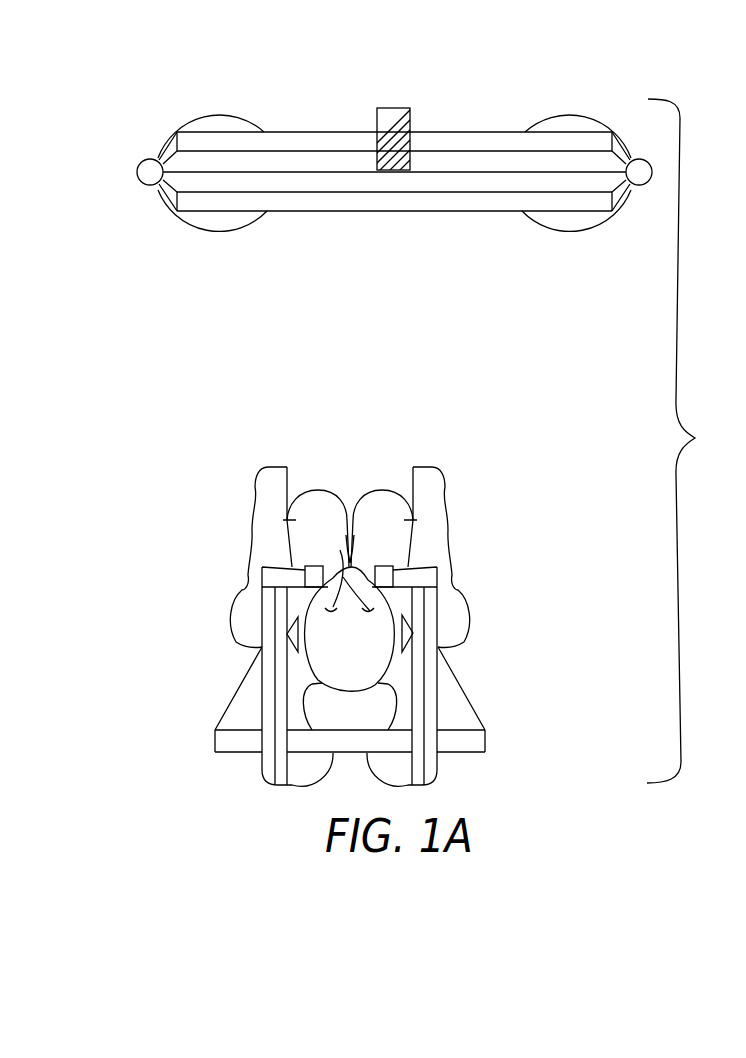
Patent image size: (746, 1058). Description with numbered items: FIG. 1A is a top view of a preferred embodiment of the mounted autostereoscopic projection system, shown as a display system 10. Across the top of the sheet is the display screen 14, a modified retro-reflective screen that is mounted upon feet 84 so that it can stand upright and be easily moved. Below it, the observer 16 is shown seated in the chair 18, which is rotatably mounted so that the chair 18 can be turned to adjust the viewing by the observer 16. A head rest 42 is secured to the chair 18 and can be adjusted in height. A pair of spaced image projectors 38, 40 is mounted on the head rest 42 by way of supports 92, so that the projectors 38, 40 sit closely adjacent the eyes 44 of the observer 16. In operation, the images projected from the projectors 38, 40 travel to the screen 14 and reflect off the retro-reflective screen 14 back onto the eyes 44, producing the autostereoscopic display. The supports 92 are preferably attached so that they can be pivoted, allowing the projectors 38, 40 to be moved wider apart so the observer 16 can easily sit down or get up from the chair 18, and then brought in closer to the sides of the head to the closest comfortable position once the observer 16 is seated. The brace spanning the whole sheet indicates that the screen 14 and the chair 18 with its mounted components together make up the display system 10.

The display system 10 is at (691, 441).
The display screen 14 is at (452, 212).
The feet 84 is at (567, 110).
The observer 16 is at (413, 478).
The image projector 38 is at (262, 580).
The image projector 40 is at (437, 580).
The eyes 44 is at (340, 550).
The head rest 42 is at (362, 723).
The chair 18 is at (262, 698).
The supports 92 is at (437, 698).